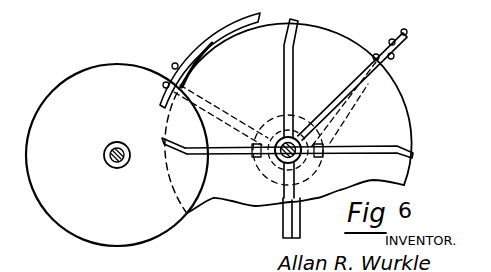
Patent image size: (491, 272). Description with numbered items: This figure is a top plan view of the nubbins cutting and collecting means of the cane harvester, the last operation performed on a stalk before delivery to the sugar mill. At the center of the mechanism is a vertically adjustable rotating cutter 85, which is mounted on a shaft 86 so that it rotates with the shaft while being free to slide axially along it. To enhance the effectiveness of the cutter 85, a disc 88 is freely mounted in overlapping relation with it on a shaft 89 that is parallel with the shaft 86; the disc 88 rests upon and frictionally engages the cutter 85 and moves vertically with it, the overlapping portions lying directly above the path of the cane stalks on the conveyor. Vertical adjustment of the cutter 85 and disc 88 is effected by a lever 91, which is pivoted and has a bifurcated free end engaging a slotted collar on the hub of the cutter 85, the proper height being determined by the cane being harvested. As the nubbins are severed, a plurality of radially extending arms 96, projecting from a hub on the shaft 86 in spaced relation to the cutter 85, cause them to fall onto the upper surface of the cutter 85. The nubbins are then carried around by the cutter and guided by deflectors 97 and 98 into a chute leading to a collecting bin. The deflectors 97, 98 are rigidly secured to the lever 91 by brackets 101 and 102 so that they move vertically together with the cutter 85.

The rotating cutter 85 is at (213, 198).
The shaft 86 is at (283, 132).
The disc 88 is at (94, 228).
The shaft 89 is at (117, 168).
The lever 91 is at (262, 175).
The radially extending arms 96 is at (296, 74).
The deflector 97 is at (343, 98).
The deflector 98 is at (212, 43).
The bracket 101 is at (337, 130).
The bracket 102 is at (203, 108).